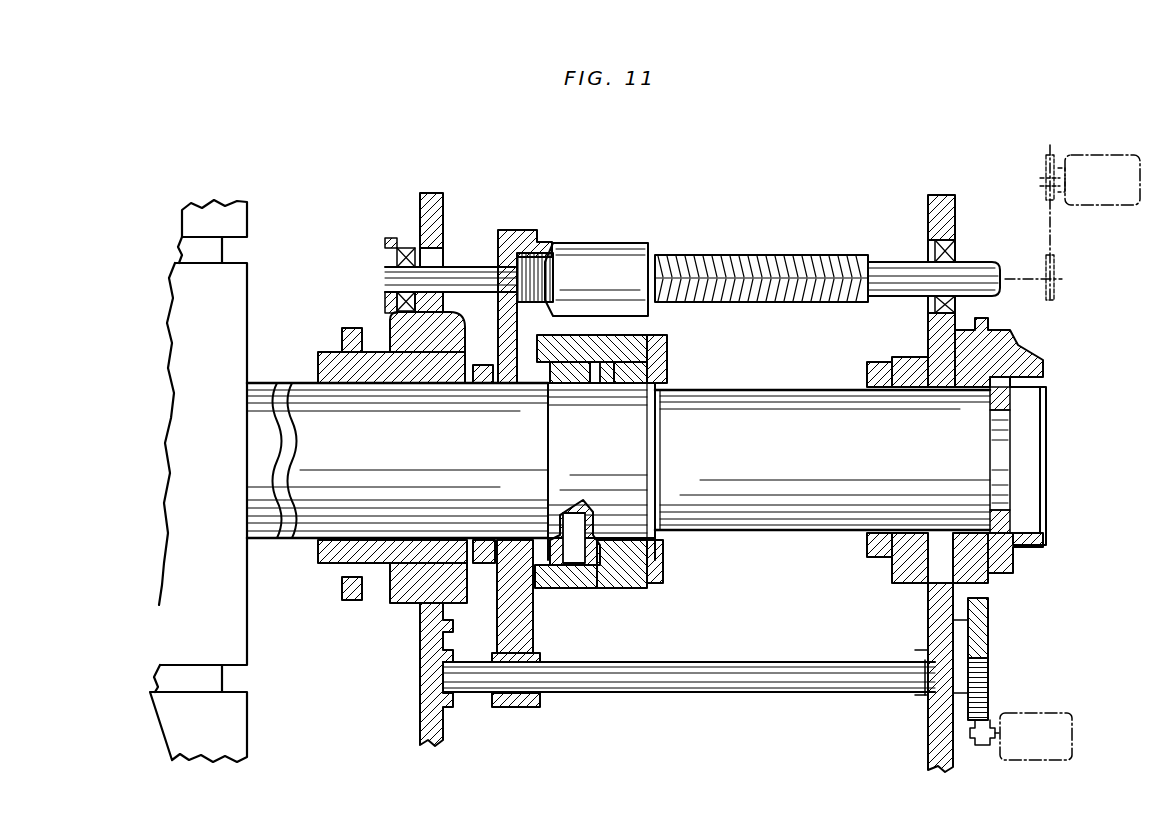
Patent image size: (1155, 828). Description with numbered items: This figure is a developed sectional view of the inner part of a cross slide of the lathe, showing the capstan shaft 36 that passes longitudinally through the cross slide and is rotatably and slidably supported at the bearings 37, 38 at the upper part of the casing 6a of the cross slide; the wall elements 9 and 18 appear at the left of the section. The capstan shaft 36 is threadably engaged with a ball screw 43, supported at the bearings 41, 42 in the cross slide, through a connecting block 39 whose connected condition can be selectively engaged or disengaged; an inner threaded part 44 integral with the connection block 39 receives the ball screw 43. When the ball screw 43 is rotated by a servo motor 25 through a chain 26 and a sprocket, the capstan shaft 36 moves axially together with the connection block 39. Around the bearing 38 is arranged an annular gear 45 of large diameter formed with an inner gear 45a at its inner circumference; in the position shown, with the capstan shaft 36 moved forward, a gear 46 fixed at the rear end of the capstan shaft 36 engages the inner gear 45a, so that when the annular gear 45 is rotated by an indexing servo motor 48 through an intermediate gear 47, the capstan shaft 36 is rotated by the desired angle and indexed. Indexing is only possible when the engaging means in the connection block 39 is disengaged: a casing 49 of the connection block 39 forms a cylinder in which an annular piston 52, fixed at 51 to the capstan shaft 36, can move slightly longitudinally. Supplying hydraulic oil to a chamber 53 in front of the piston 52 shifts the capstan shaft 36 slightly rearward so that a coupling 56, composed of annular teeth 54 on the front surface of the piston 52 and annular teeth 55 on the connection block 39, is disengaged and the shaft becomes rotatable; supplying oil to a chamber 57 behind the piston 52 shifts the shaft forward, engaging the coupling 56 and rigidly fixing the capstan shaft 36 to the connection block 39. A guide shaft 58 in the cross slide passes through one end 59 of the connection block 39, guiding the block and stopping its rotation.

The servo motor 9 is at (236, 297).
The frame member 18 is at (215, 210).
The casing 6a is at (420, 212).
The servo motor 25 is at (1108, 156).
The chain 26 is at (1055, 218).
The capstan shaft 36 is at (466, 482).
The bearing 37 is at (352, 328).
The bearing 38 is at (918, 360).
The connecting block 39 is at (690, 348).
The bearing 41 is at (390, 258).
The bearing 42 is at (958, 250).
The ball screw 43 is at (700, 258).
The inner threaded part 44 is at (604, 268).
The annular gear 45 is at (1020, 350).
The inner gear 45a is at (1040, 392).
The gear 46 is at (1012, 520).
The intermediate gear 47 is at (985, 632).
The indexing servo motor 48 is at (1045, 712).
The casing 49 is at (645, 345).
The fixing point 51 is at (584, 560).
The annular piston 52 is at (570, 370).
The chamber 53 is at (498, 352).
The annular teeth 54 is at (577, 560).
The annular teeth 55 is at (495, 590).
The coupling 56 is at (508, 285).
The chamber 57 is at (598, 385).
The guide shaft 58 is at (712, 665).
The end of connection block 59 is at (512, 708).